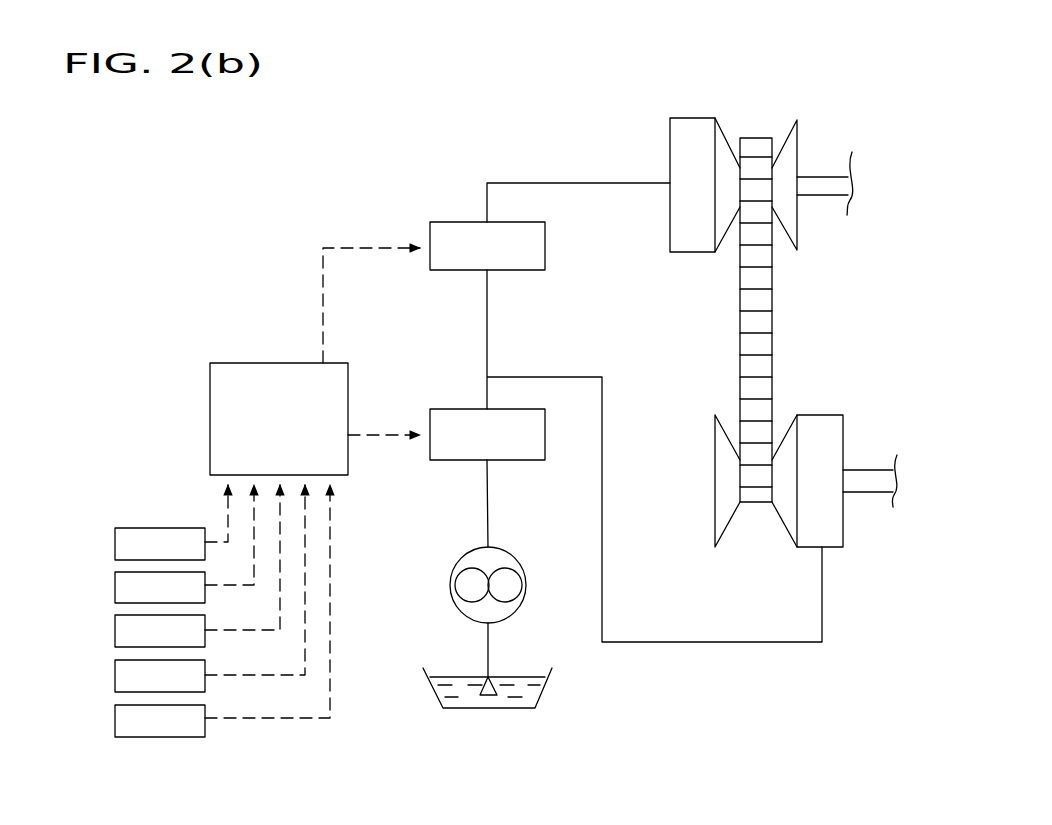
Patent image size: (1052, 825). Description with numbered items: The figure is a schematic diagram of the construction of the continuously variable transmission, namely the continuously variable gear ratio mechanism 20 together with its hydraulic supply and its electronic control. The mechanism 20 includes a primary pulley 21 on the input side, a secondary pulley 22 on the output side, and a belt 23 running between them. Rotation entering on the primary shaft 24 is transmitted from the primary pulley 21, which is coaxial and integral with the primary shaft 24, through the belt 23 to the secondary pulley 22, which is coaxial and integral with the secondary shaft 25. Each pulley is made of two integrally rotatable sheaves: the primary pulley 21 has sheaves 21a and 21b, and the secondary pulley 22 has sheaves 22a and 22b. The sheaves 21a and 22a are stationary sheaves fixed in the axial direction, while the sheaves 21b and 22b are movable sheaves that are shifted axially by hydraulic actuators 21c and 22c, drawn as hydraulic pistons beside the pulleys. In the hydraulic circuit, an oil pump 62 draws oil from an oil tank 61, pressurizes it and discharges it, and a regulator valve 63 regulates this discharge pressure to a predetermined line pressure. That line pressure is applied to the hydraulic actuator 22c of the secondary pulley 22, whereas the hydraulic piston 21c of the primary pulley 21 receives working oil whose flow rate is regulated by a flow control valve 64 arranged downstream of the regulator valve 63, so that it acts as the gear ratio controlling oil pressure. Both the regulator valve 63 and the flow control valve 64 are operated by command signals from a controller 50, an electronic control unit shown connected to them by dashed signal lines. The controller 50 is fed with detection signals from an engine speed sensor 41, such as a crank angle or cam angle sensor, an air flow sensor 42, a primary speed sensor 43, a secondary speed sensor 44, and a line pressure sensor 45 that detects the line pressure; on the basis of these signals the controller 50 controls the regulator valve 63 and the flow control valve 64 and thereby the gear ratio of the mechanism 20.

The continuously variable gear ratio mechanism 20 is at (812, 258).
The primary pulley 21 is at (746, 122).
The sheave 21a is at (790, 148).
The sheave 21b is at (727, 160).
The hydraulic actuator 21c is at (683, 135).
The secondary pulley 22 is at (782, 410).
The sheave 22a is at (725, 530).
The sheave 22b is at (787, 510).
The hydraulic actuator 22c is at (830, 515).
The belt 23 is at (774, 296).
The primary shaft 24 is at (828, 177).
The secondary shaft 25 is at (867, 470).
The engine speed sensor 41 is at (142, 528).
The air flow sensor 42 is at (115, 585).
The primary speed sensor 43 is at (115, 630).
The secondary speed sensor 44 is at (115, 685).
The line pressure sensor 45 is at (150, 737).
The controller 50 is at (268, 363).
The oil tank 61 is at (536, 692).
The oil pump 62 is at (518, 568).
The regulator valve 63 is at (455, 415).
The flow control valve 64 is at (545, 250).